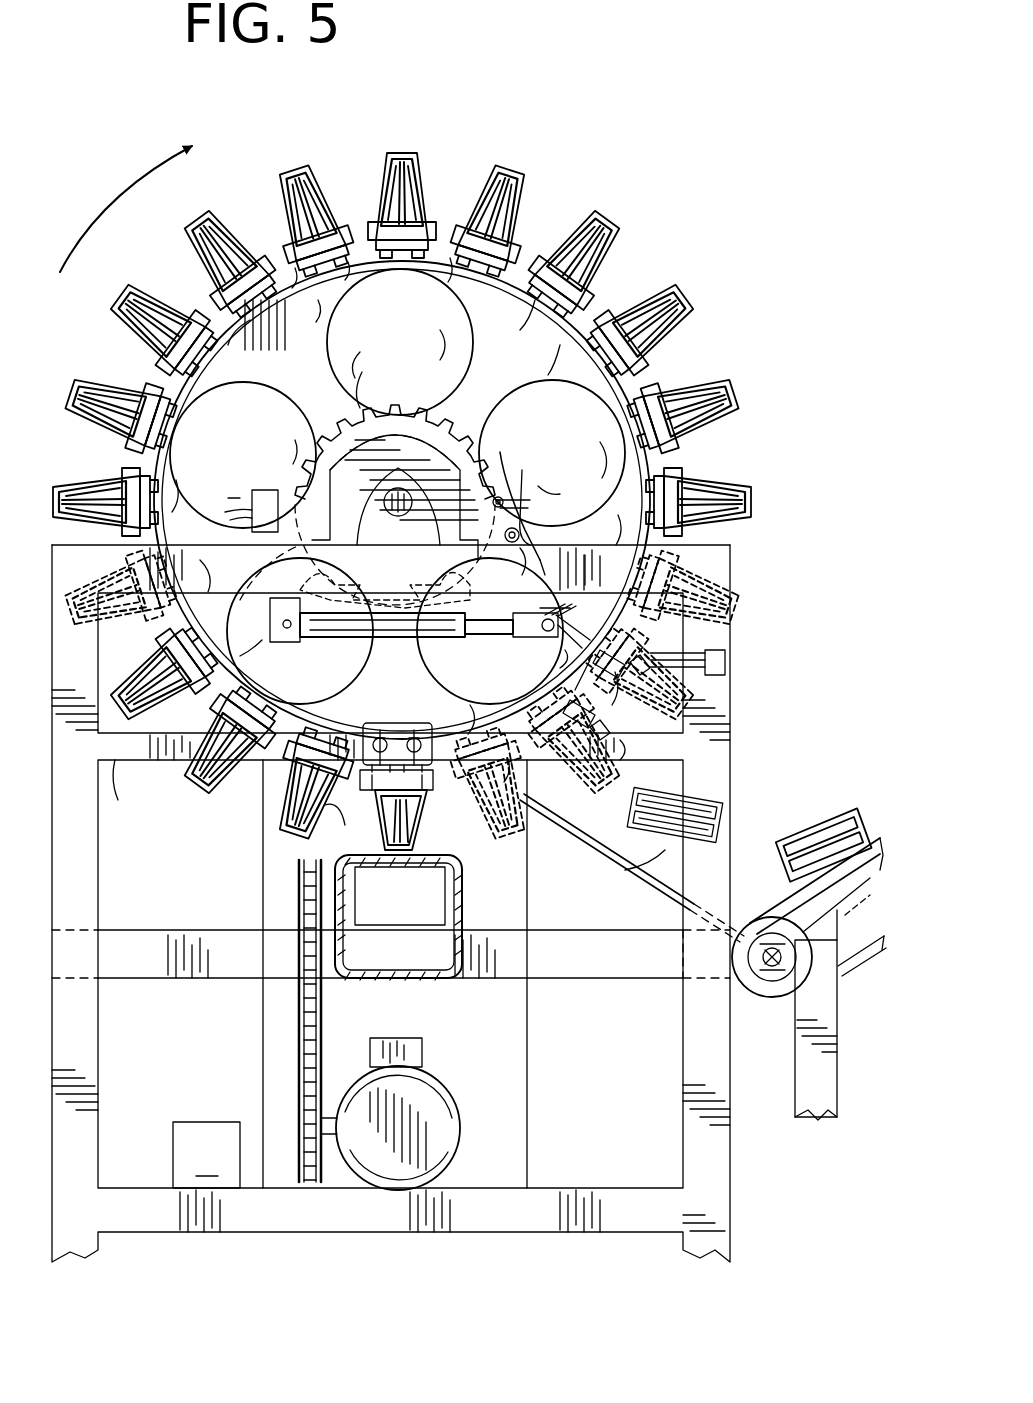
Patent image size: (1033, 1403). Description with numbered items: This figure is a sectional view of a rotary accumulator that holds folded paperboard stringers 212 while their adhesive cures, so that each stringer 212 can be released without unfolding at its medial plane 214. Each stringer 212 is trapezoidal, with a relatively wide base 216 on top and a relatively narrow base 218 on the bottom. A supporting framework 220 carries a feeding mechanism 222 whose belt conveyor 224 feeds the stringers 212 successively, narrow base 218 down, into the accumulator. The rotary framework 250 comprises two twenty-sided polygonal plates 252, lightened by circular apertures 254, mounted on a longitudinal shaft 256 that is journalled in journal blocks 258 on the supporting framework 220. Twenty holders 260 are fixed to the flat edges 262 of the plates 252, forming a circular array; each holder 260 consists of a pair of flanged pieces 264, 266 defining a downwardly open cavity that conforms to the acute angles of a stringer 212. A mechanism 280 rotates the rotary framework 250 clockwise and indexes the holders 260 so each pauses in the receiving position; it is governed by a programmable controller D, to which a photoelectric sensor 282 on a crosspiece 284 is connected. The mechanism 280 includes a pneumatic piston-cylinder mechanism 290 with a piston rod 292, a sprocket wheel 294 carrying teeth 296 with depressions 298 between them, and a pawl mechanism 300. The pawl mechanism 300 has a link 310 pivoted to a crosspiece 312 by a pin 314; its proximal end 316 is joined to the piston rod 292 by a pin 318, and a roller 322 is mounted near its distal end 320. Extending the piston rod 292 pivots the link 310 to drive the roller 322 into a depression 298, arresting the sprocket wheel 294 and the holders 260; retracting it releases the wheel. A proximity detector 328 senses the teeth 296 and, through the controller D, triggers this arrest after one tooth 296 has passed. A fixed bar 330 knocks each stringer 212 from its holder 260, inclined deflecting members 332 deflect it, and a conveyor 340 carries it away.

The stringer 212 is at (348, 170).
The medial plane 214 is at (412, 816).
The relatively wide base 216 is at (412, 716).
The relatively narrow base 218 is at (872, 805).
The supporting framework 220 is at (712, 1148).
The feeding mechanism 222 is at (478, 896).
The belt conveyor 224 is at (450, 852).
The rotary framework 250 is at (603, 302).
The polygonal plate 252 is at (306, 362).
The circular aperture 254 is at (376, 282).
The longitudinal shaft 256 is at (401, 506).
The journal block 258 is at (355, 576).
The holder 260 is at (408, 523).
The flat edge 262 is at (368, 331).
The flanged piece 264 is at (545, 772).
The flanged piece 266 is at (655, 660).
The rotating mechanism 280 is at (462, 415).
The photoelectric sensor 282 is at (343, 825).
The crosspiece 284 is at (135, 792).
The piston-cylinder mechanism 290 is at (394, 638).
The piston rod 292 is at (478, 636).
The sprocket wheel 294 is at (395, 505).
The tooth 296 is at (333, 417).
The depression 298 is at (451, 426).
The pawl mechanism 300 is at (532, 537).
The link 310 is at (590, 580).
The crosspiece 312 is at (584, 636).
The pin 314 is at (552, 491).
The proximal end 316 is at (538, 645).
The pin 318 is at (540, 608).
The distal end 320 is at (516, 492).
The roller 322 is at (530, 500).
The proximity detector 328 is at (278, 488).
The bar 330 is at (725, 680).
The deflecting member 332 is at (652, 860).
The conveyor 340 is at (762, 1008).
The programmable controller D is at (206, 1155).